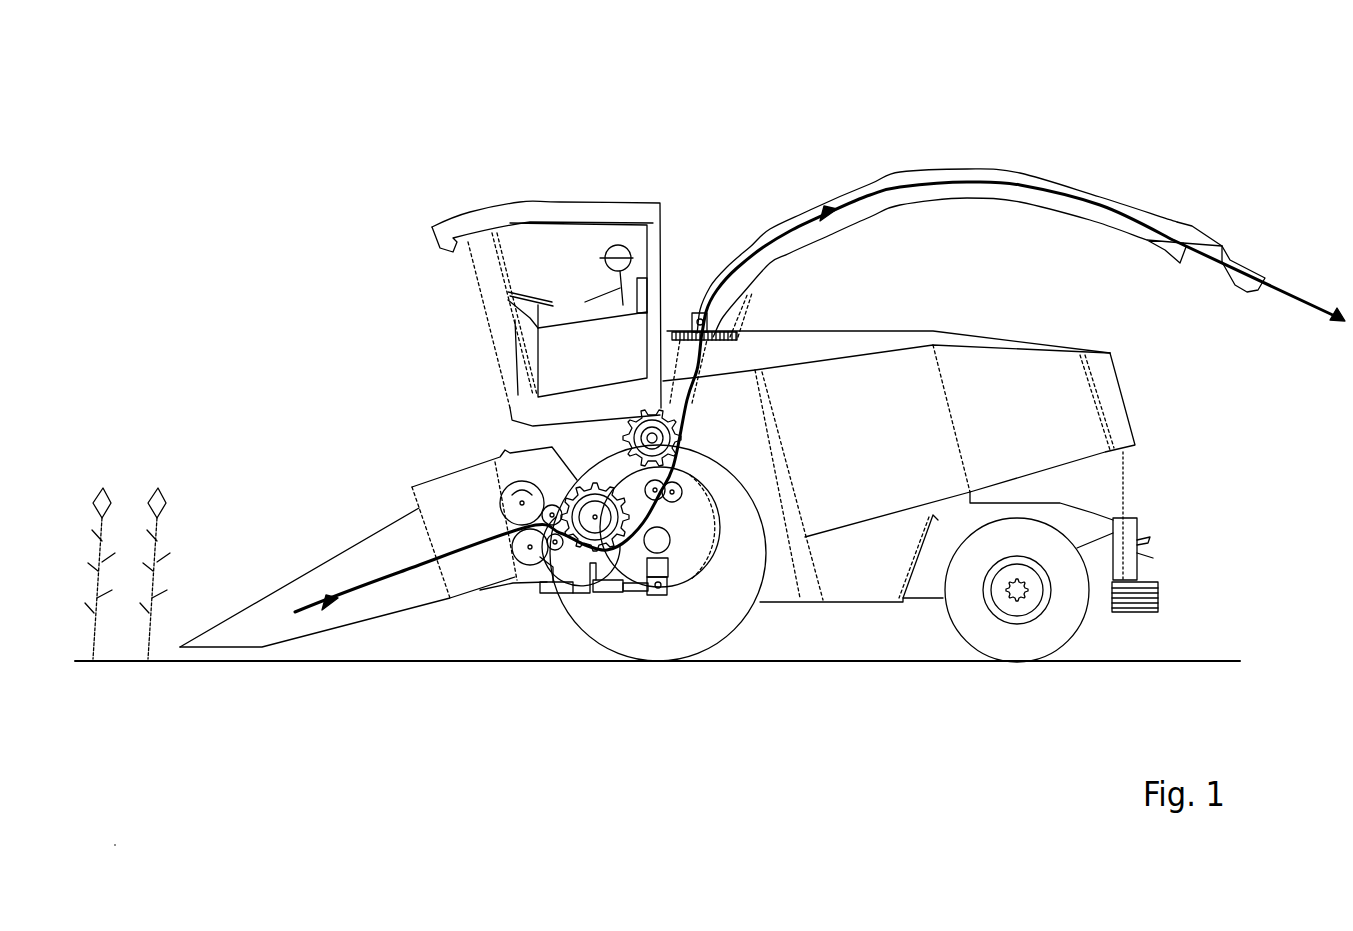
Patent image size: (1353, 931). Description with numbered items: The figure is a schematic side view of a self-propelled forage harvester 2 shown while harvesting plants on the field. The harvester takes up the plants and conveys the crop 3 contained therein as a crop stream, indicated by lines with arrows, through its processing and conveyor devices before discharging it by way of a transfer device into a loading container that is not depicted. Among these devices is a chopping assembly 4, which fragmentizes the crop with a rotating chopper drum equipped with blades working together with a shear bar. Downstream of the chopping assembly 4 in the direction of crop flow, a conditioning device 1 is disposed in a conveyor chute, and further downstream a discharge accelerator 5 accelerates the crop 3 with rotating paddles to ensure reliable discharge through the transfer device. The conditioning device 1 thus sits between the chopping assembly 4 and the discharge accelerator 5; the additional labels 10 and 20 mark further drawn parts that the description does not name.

The conditioning device 1 is at (670, 508).
The self-propelled forage harvester 2 is at (350, 197).
The crop 3 is at (813, 217).
The chopping assembly 4 is at (548, 485).
The discharge accelerator 5 is at (672, 433).
The chopping device 10 is at (668, 456).
The feed rollers 20 is at (680, 491).